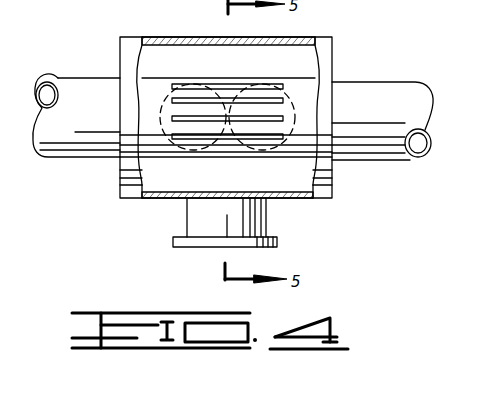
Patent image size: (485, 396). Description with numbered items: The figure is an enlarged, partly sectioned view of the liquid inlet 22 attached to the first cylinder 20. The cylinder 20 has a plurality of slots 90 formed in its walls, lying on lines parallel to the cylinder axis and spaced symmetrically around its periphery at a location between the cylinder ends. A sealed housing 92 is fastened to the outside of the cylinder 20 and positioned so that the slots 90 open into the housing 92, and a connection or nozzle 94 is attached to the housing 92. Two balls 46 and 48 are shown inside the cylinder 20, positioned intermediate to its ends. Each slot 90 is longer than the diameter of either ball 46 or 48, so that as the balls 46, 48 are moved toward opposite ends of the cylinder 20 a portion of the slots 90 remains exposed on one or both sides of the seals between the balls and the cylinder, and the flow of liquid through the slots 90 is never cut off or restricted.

The first cylinder 20 is at (386, 76).
The liquid inlet 22 is at (322, 184).
The ball 46 is at (187, 103).
The ball 48 is at (269, 105).
The slots 90 is at (226, 86).
The sealed housing 92 is at (298, 53).
The nozzle 94 is at (197, 213).